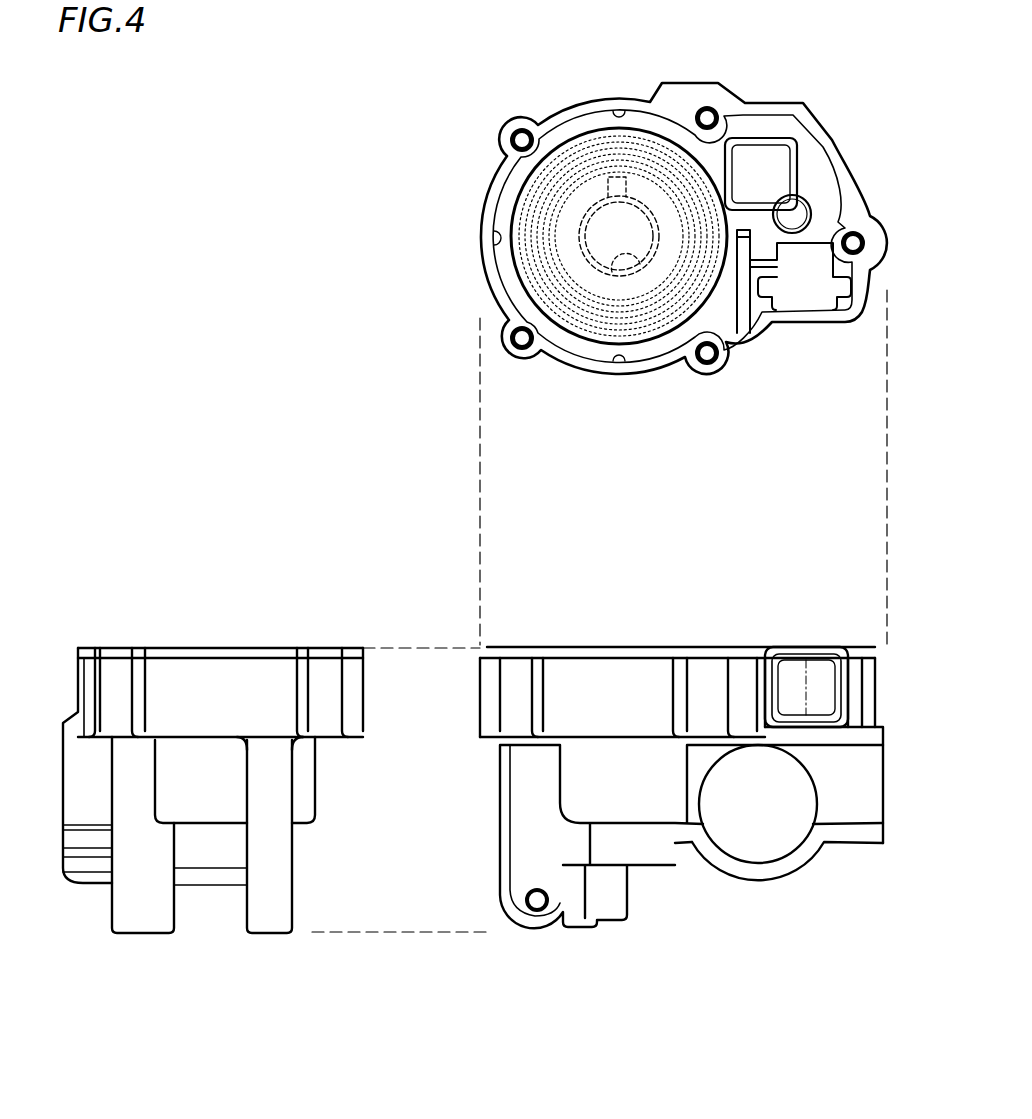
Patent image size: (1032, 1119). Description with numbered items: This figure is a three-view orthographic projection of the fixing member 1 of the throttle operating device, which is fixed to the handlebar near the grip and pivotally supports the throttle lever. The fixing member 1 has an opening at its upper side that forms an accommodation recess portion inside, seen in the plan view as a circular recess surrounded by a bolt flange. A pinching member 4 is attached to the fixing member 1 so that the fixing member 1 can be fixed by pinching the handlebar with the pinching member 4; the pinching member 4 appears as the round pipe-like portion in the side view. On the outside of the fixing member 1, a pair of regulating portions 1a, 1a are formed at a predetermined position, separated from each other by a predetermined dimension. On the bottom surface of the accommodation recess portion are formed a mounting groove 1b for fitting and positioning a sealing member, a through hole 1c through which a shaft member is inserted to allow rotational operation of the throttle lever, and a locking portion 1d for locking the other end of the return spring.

The fixing member 1 is at (830, 135).
The regulating portions 1a is at (143, 935).
The mounting groove 1b is at (523, 223).
The through hole 1c is at (630, 268).
The locking portion 1d is at (601, 143).
The pinching member 4 is at (763, 882).